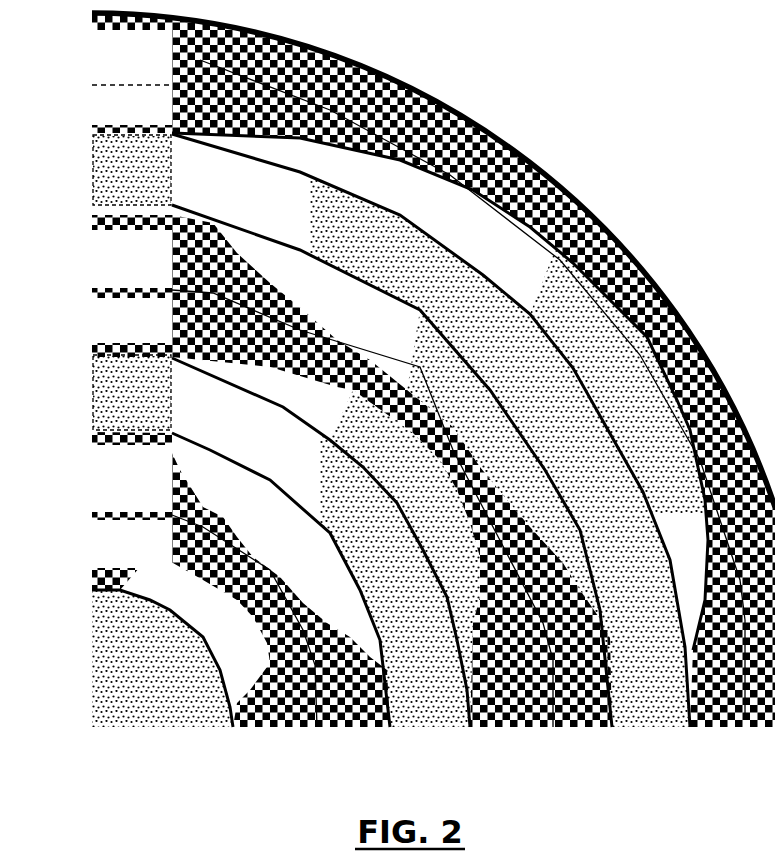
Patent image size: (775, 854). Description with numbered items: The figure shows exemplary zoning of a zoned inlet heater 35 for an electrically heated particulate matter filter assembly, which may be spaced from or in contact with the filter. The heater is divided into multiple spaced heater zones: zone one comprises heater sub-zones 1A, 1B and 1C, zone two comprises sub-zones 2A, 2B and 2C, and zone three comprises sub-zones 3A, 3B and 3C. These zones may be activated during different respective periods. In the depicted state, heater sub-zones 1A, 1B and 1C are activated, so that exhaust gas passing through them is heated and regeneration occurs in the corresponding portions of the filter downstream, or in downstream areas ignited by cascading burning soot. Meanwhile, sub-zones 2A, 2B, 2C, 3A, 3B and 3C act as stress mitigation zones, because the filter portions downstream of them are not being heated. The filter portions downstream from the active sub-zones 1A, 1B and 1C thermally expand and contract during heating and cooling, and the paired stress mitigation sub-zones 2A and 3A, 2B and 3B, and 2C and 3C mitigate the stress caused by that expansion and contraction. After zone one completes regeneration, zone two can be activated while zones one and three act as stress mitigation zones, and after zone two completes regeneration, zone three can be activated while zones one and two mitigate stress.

The zoned inlet heater 35 is at (433, 370).
The sub-zone 3C is at (433, 370).
The sub-zone 2C is at (418, 390).
The heater sub-zone 1C is at (399, 430).
The sub-zone 3B is at (352, 471).
The sub-zone 2B is at (322, 508).
The heater sub-zone 1B is at (286, 539).
The sub-zone 3A is at (241, 579).
The sub-zone 2A is at (204, 621).
The heater sub-zone 1A is at (162, 658).